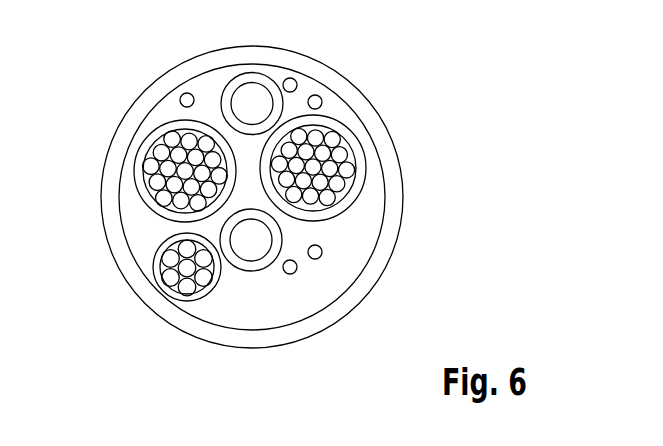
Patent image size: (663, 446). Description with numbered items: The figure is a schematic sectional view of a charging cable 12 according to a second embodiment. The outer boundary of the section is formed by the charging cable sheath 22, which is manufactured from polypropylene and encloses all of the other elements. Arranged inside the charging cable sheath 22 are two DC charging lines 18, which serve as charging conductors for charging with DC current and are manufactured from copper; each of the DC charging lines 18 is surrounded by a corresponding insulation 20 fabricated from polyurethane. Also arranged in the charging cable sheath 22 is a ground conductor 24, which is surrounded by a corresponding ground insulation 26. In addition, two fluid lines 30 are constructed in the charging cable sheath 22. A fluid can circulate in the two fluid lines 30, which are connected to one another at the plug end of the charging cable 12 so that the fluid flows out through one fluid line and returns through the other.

The charging cable 12 is at (98, 100).
The DC charging lines 18 is at (160, 185).
The insulations 20 is at (360, 192).
The charging cable sheath 22 is at (380, 253).
The ground conductor 24 is at (187, 282).
The ground insulation 26 is at (320, 257).
The fluid lines 30 is at (227, 93).